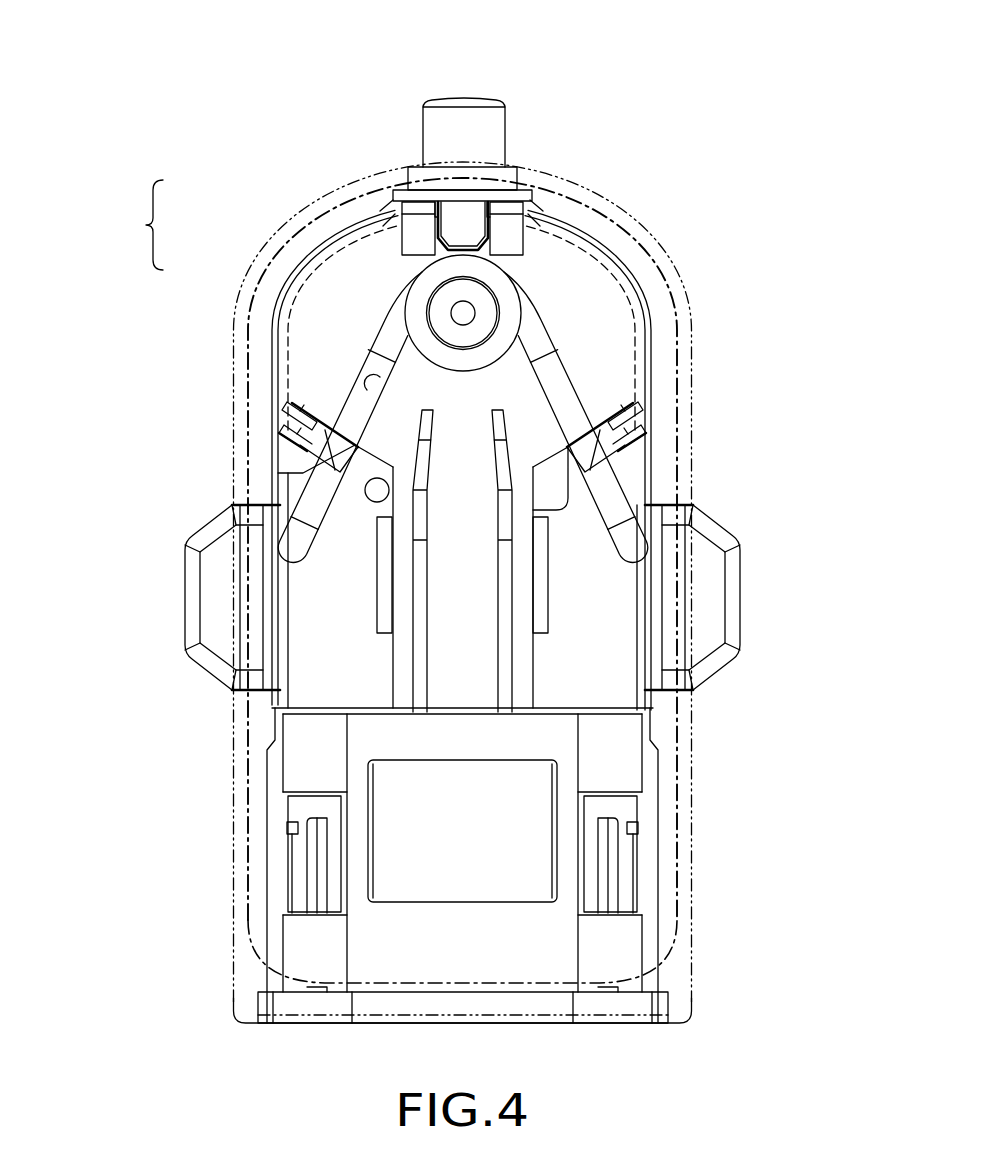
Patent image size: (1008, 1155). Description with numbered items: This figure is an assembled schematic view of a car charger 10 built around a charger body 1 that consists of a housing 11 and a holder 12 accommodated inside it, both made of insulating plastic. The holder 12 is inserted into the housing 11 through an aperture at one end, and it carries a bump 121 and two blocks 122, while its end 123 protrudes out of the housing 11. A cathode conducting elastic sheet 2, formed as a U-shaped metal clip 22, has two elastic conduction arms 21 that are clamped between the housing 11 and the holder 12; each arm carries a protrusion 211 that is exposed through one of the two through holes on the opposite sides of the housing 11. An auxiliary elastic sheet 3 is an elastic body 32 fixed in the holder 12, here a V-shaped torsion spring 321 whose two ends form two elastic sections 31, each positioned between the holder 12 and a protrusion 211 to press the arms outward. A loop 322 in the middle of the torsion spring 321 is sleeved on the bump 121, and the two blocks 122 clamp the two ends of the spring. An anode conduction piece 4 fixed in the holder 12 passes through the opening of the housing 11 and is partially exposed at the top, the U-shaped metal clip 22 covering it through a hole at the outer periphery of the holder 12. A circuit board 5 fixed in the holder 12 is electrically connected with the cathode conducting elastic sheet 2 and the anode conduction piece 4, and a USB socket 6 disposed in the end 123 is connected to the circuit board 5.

The switch assembly 10 is at (476, 31).
The charger body 1 is at (145, 225).
The housing 11 is at (300, 200).
The holder 12 is at (325, 282).
The bump 121 is at (505, 312).
The blocks 122 is at (305, 463).
The end 123 is at (302, 1023).
The cathode conducting elastic sheet 2 is at (652, 400).
The elastic conduction arms 21 is at (333, 455).
The protrusion 211 is at (190, 598).
The U-shaped metal clip 22 is at (565, 220).
The auxiliary elastic sheet 3 is at (566, 361).
The elastic sections 31 is at (187, 537).
The elastic body 32 is at (517, 278).
The torsion spring 321 is at (393, 318).
The loop 322 is at (507, 298).
The anode conduction piece 4 is at (474, 119).
The circuit board 5 is at (605, 617).
The socket 6 is at (592, 867).